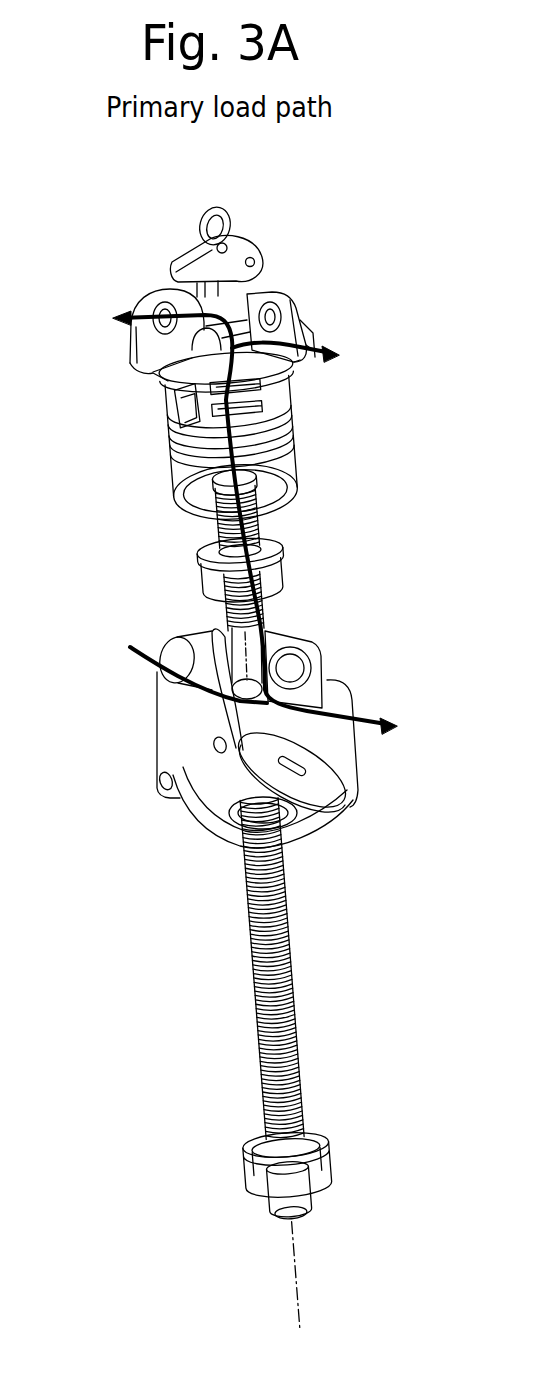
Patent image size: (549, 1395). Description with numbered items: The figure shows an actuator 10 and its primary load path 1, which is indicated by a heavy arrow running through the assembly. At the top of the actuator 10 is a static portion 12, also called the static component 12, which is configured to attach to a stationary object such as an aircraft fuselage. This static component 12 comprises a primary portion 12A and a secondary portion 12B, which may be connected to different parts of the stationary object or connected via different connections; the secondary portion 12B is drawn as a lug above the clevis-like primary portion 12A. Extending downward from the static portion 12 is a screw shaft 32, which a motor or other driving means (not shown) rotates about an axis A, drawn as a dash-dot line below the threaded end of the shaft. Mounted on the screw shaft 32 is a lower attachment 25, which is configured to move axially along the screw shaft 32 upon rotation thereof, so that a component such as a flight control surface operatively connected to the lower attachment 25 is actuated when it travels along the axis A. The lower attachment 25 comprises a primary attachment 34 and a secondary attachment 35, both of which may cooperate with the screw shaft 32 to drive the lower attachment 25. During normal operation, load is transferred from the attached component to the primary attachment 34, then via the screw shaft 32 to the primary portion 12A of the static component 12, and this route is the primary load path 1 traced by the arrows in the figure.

The primary load path 1 is at (127, 316).
The actuator 10 is at (167, 1089).
The static portion 12 is at (346, 266).
The primary portion 12A is at (135, 368).
The secondary portion 12B is at (247, 247).
The lower attachment 25 is at (140, 785).
The screw shaft 32 is at (293, 987).
The primary attachment 34 is at (304, 646).
The secondary attachment 35 is at (357, 753).
The axis A is at (298, 1282).